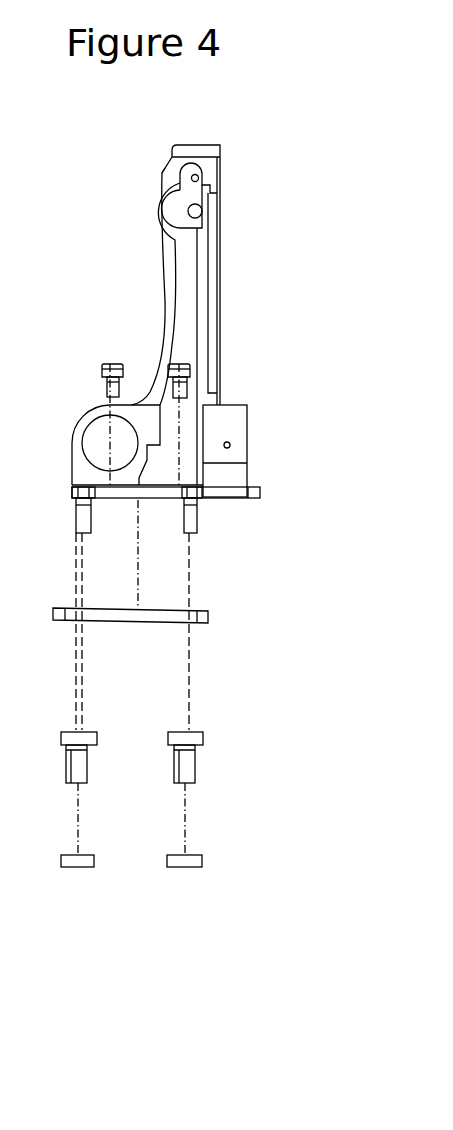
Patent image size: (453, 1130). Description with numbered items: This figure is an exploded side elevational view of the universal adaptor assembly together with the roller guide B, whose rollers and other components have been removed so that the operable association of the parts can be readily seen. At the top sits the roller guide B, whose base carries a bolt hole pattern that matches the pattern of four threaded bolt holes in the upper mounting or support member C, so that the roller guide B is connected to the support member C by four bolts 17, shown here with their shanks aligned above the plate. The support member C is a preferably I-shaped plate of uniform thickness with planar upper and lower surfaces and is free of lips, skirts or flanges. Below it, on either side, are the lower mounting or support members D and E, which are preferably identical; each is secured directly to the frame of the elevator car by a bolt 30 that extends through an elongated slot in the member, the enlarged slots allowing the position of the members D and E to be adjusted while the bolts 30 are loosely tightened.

The bolts 17 is at (67, 513).
The bolt 30 is at (62, 767).
The roller guide B is at (126, 283).
The upper mounting or support member C is at (248, 626).
The lower mounting or support member D is at (201, 884).
The lower mounting or support member E is at (86, 886).